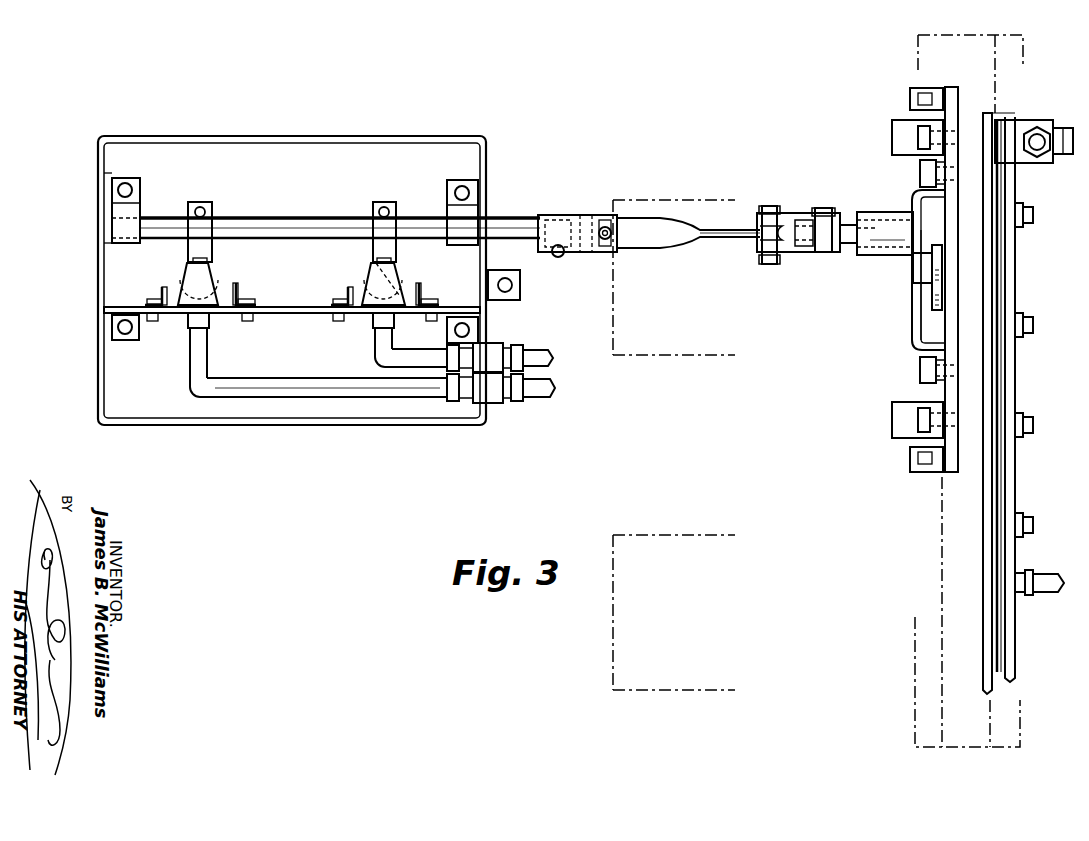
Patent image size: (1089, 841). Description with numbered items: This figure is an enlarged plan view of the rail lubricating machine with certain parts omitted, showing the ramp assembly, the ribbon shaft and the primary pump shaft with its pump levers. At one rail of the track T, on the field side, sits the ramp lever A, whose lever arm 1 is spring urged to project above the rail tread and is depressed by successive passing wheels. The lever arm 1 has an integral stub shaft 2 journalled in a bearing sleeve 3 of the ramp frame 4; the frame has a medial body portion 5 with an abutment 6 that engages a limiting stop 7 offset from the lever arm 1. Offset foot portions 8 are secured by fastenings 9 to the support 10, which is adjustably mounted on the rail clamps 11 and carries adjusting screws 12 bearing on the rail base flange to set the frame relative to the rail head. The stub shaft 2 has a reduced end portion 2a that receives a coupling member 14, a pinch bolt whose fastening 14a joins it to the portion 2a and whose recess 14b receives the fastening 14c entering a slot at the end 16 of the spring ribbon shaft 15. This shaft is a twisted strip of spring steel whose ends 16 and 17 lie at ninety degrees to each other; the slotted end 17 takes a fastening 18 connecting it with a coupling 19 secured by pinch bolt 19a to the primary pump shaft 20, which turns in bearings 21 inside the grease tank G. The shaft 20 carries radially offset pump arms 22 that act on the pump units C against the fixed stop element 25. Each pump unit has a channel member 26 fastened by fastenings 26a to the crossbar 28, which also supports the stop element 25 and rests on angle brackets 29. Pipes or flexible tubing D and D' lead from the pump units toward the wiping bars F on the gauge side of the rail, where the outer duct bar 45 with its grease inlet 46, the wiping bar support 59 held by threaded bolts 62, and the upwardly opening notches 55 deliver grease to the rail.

The grease tank G is at (268, 136).
The crossbar 28 is at (305, 314).
The primary pump shaft 20 is at (334, 216).
The bearings 21 is at (139, 212).
The angle brackets 29 is at (140, 334).
The pump arms 22 is at (188, 252).
The pump units C is at (226, 268).
The fixed stop element 25 is at (395, 278).
The channel member 26 is at (342, 292).
The fastenings 26a is at (240, 330).
The pipe or flexible tubing D' is at (515, 350).
The pipe or flexible tubing D is at (516, 395).
The coupling 19 is at (590, 215).
The pinch bolt 19a is at (560, 257).
The fastening 18 is at (608, 250).
The spring ribbon shaft 15 is at (670, 250).
The end of ribbon shaft 16 is at (728, 244).
The end of ribbon shaft 17 is at (649, 200).
The coupling member 14 is at (797, 213).
The fastening 14a is at (824, 207).
The recess 14b is at (799, 247).
The fastening 14c is at (768, 262).
The reduced end portion 2a is at (845, 244).
The bearing sleeve 3 is at (873, 253).
The stub shaft 2 is at (878, 210).
The support 10 is at (958, 475).
The medial body portion 5 is at (912, 304).
The ramp frame 4 is at (912, 344).
The ramp lever A is at (912, 316).
The abutment 6 is at (912, 280).
The lever arm 1 is at (938, 256).
The limiting stop 7 is at (940, 288).
The adjusting screws 12 is at (909, 98).
The rail clamps 11 is at (891, 136).
The fastenings 9 is at (919, 166).
The offset foot portions 8 is at (947, 166).
The wiping bars F is at (1002, 368).
The notches 55 is at (1003, 263).
The threaded bolts 62 is at (1033, 324).
The wiping bar support 59 is at (993, 184).
The grease inlet 46 is at (1026, 573).
The outer duct bar 45 is at (1002, 559).
The track T is at (1023, 67).